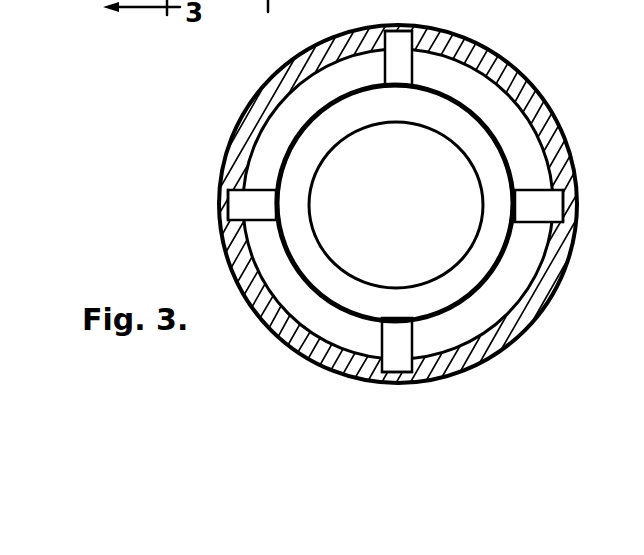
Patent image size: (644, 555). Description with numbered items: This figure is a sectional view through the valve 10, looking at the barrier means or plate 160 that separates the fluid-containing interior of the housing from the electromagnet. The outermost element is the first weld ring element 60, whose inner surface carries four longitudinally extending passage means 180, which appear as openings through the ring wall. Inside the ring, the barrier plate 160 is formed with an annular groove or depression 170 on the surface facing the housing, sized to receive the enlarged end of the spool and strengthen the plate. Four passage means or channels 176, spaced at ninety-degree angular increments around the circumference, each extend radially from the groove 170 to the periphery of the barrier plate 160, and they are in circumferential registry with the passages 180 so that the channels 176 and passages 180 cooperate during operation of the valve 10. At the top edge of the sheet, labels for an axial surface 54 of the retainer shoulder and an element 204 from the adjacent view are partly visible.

The valve 10 is at (562, 96).
The first weld ring element 60 is at (557, 127).
The barrier plate 160 is at (488, 308).
The annular groove 170 is at (462, 114).
The passage means or channels 176 is at (404, 62).
The longitudinally extending passage means 180 is at (399, 30).
The housing portion 204 is at (239, 7).
The axial surface 54 is at (269, 19).